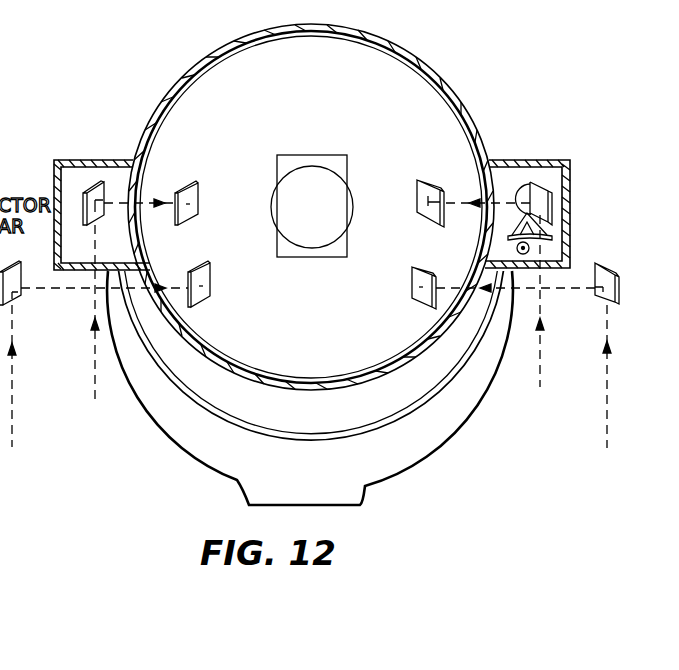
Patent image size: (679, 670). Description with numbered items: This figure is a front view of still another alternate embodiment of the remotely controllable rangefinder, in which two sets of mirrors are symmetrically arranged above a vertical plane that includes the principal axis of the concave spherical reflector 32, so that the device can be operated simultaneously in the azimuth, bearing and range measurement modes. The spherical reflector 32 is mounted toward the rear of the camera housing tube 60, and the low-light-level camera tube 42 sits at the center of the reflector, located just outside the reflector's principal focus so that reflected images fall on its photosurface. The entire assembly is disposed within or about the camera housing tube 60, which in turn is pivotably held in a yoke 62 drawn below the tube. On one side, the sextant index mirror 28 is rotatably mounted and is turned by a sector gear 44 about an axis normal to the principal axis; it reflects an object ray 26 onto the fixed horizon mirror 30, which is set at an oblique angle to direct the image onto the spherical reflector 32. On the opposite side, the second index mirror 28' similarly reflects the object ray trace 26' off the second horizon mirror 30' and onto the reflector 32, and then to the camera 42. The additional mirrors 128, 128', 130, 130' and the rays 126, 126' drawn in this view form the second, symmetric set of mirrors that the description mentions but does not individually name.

The object ray 26 is at (514, 293).
The object ray trace 26' is at (110, 299).
The sextant index mirror 28 is at (560, 191).
The index mirror 28' is at (84, 173).
The sextant horizon mirror 30 is at (420, 185).
The horizon mirror 30' is at (215, 187).
The concave spherical reflector 32 is at (318, 119).
The low-light-level camera tube 42 is at (326, 218).
The sector gear 44 is at (552, 236).
The camera housing tube 60 is at (357, 386).
The yoke 62 is at (414, 456).
The light beam 126 is at (542, 366).
The light beam 126' is at (98, 365).
The mirror 128 is at (627, 288).
The mirror 128' is at (10, 283).
The mirror 130 is at (393, 300).
The mirror 130' is at (235, 284).